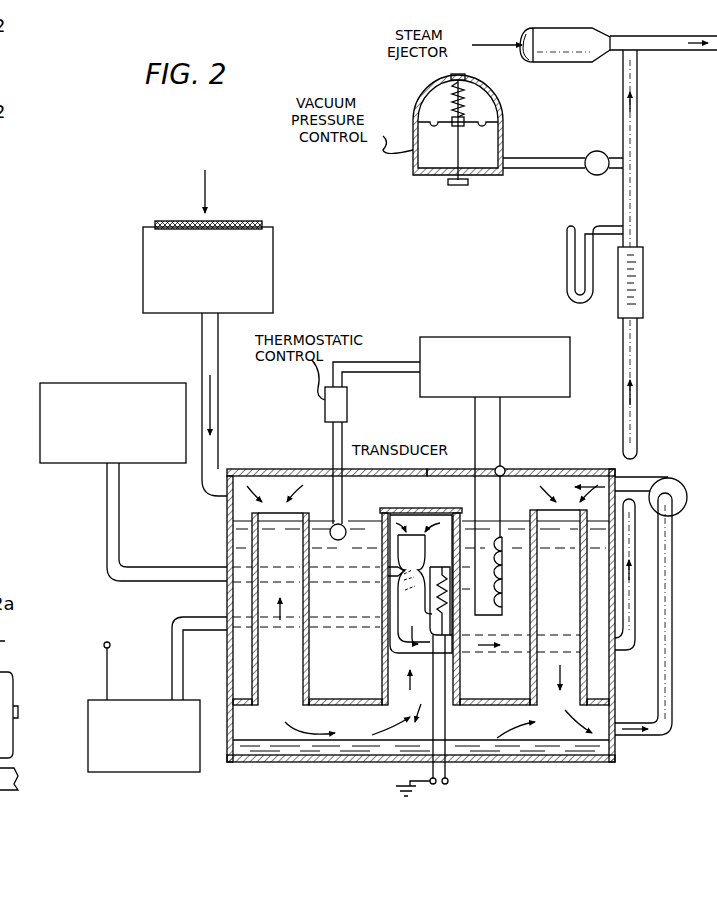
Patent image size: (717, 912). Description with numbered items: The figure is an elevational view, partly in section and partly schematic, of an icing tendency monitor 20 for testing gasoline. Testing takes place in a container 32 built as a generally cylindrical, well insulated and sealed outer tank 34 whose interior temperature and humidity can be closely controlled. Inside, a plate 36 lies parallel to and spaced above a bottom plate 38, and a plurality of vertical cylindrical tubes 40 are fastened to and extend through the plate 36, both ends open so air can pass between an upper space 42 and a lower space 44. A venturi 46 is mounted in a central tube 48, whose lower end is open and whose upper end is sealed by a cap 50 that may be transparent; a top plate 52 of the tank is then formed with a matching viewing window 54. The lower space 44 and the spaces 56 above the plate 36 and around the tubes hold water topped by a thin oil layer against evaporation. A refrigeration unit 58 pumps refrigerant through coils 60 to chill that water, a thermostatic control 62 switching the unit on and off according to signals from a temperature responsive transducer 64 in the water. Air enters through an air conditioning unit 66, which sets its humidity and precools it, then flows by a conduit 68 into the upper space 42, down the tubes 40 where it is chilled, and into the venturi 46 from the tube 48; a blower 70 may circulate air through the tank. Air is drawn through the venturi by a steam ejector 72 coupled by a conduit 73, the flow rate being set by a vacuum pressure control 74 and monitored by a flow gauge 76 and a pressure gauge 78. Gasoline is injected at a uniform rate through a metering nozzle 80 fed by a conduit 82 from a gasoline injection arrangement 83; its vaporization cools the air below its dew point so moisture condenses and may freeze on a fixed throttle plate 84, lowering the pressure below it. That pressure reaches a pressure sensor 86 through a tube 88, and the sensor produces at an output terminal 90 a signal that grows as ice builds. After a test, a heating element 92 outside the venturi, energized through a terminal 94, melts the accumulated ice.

The icing tendency monitor 20 is at (177, 173).
The container 32 is at (610, 767).
The outer tank 34 is at (228, 751).
The plate 36 is at (511, 704).
The bottom plate 38 is at (512, 762).
The cylindrical tubes 40 is at (303, 605).
The upper space 42 is at (559, 449).
The lower space 44 is at (422, 730).
The venturi 46 is at (418, 536).
The central tube 48 is at (391, 521).
The cap 50 is at (372, 507).
The top plate 52 is at (286, 449).
The viewing window 54 is at (435, 470).
The spaces 56 is at (254, 678).
The refrigeration unit 58 is at (516, 320).
The coils 60 is at (503, 560).
The thermostatic control 62 is at (347, 418).
The temperature responsive transducer 64 is at (330, 538).
The air conditioning unit 66 is at (273, 277).
The conduit 68 is at (218, 421).
The blower 70 is at (681, 483).
The steam ejector 72 is at (549, 63).
The conduit 73 is at (639, 211).
The vacuum pressure control 74 is at (503, 146).
The flow gauge 76 is at (643, 299).
The pressure gauge 78 is at (567, 266).
The metering nozzle 80 is at (397, 573).
The conduit 82 is at (178, 568).
The gasoline injection arrangement 83 is at (116, 369).
The throttle plate 84 is at (397, 594).
The pressure sensor 86 is at (128, 773).
The tube 88 is at (172, 661).
The output terminal 90 is at (103, 643).
The heating element 92 is at (430, 569).
The terminal 94 is at (448, 782).